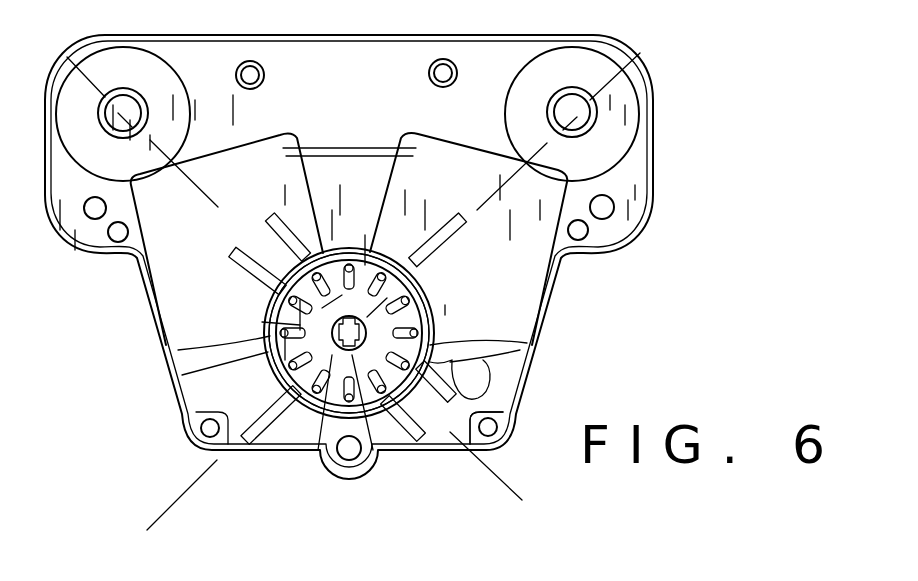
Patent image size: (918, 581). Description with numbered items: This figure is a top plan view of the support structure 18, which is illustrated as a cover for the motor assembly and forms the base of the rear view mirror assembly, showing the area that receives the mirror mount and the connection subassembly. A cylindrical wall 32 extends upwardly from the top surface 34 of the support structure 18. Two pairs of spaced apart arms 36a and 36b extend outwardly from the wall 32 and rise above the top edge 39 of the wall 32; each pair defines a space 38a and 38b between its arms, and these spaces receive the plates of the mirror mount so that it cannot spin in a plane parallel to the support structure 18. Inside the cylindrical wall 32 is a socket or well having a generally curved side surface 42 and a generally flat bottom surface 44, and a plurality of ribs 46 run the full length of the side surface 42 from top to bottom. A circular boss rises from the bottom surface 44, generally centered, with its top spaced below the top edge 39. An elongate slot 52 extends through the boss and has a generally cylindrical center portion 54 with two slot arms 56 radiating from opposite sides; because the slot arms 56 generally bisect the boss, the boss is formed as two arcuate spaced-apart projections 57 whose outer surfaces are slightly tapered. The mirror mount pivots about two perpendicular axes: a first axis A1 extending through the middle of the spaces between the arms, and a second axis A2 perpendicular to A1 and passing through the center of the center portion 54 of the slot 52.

The support structure 18 is at (674, 118).
The cylindrical wall 32 is at (432, 311).
The top surface 34 is at (447, 191).
The arms 36a is at (485, 364).
The arms 36b is at (277, 221).
The space 38a is at (478, 413).
The space 38b is at (268, 218).
The top edge 39 is at (427, 291).
The side surface 42 is at (358, 337).
The bottom surface 44 is at (220, 323).
The ribs 46 is at (393, 255).
The elongate slot 52 is at (371, 452).
The center portion 54 is at (180, 365).
The slot arms 56 is at (318, 455).
The arcuate projections 57 is at (183, 375).
The first pivot axis A1 is at (503, 472).
The second pivot axis A2 is at (183, 493).